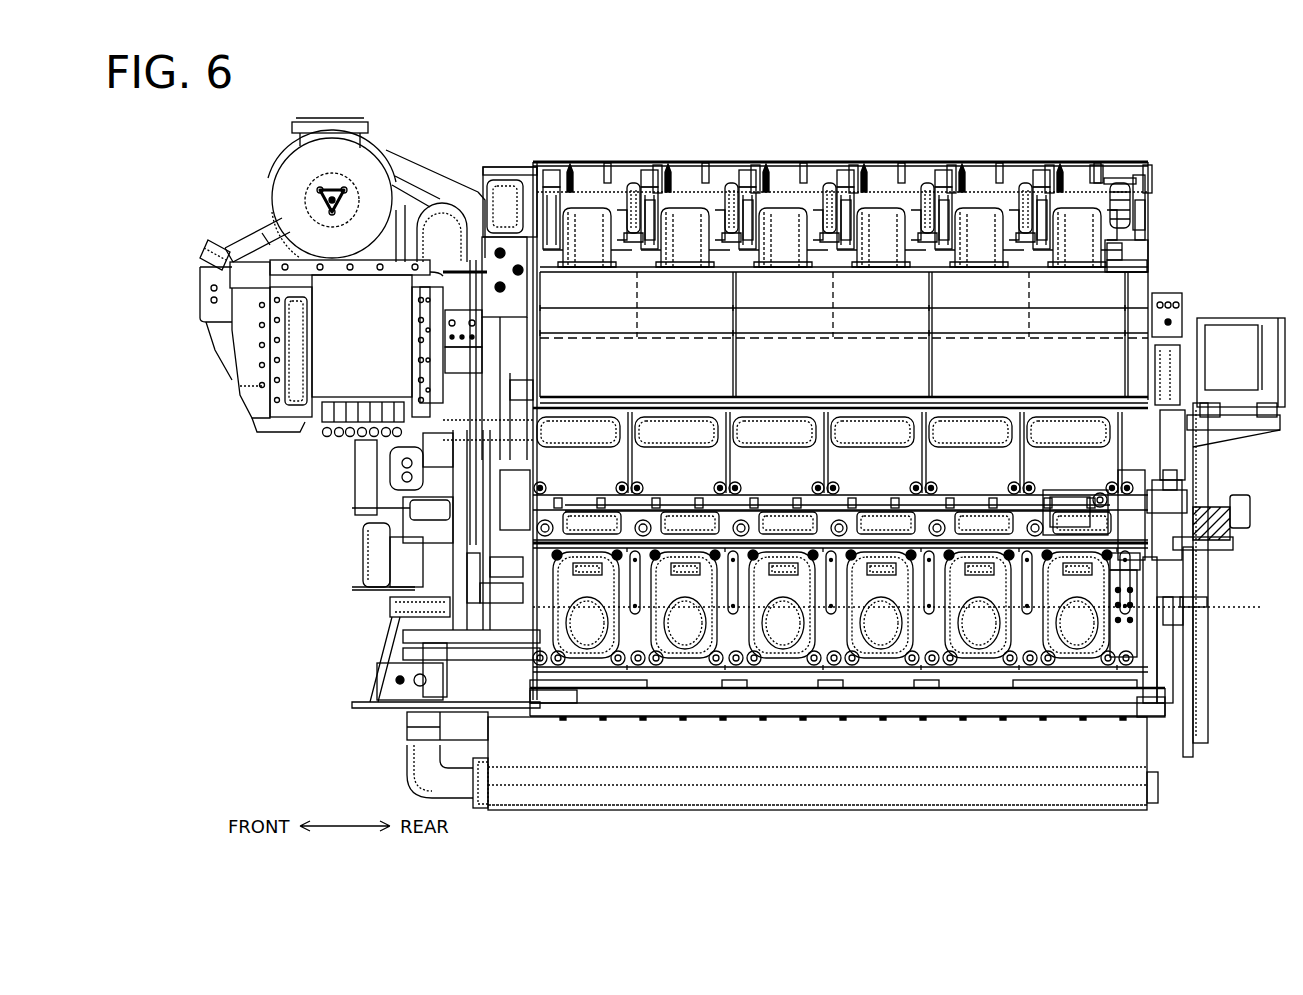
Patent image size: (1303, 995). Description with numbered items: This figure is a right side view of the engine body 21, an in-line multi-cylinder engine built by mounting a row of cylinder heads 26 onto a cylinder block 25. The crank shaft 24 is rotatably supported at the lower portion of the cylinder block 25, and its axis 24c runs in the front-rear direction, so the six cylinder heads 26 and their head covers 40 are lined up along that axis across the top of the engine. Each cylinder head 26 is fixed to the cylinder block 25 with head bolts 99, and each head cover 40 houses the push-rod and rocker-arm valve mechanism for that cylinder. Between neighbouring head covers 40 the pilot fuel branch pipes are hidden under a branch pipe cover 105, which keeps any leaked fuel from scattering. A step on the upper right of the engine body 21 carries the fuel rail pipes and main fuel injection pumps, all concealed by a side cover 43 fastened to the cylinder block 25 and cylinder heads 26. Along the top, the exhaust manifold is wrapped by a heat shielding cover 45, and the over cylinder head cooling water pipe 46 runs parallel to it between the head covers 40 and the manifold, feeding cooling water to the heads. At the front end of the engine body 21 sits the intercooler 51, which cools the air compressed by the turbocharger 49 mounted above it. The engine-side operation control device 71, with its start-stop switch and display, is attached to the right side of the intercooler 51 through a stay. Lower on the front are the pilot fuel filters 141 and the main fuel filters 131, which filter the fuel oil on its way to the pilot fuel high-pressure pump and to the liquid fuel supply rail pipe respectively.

The engine body 21 is at (262, 716).
The crank shaft 24 is at (1183, 700).
The axis 24c is at (1247, 607).
The cylinder block 25 is at (540, 713).
The cylinder head 26 is at (1003, 340).
The head cover 40 is at (582, 183).
The side cover 43 is at (1137, 283).
The heat shielding cover 45 is at (1118, 162).
The over cylinder head cooling water pipe 46 is at (1107, 195).
The turbocharger 49 is at (260, 200).
The intercooler 51 is at (257, 430).
The engine-side operation control device 71 is at (333, 437).
The head bolt 99 is at (1108, 243).
The branch pipe cover 105 is at (621, 195).
The main fuel filter 131 is at (403, 602).
The pilot fuel filter 141 is at (387, 543).